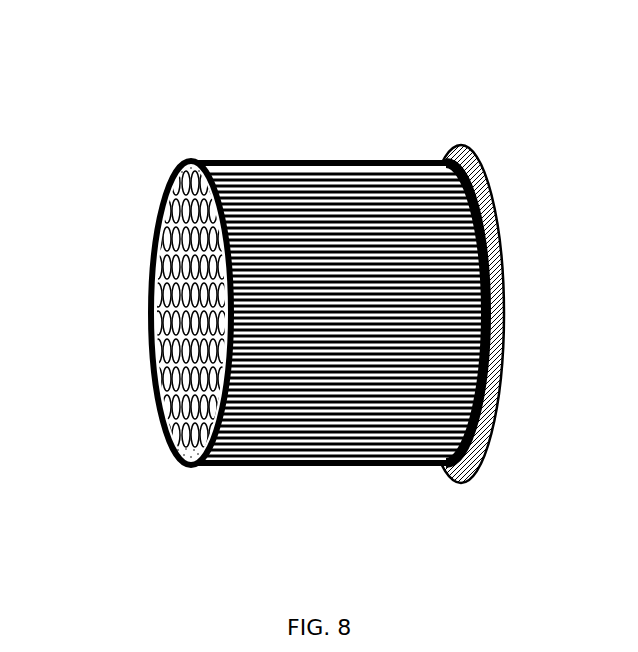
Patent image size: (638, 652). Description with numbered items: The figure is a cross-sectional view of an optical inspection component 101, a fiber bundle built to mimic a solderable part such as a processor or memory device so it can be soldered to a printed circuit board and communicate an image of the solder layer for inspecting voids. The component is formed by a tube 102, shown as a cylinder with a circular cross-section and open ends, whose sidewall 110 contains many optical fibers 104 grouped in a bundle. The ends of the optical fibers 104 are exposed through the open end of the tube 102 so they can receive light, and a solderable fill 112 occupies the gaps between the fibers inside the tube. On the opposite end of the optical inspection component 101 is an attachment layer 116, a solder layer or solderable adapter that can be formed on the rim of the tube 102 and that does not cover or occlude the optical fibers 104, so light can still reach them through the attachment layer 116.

The optical inspection component 101 is at (201, 78).
The tube 102 is at (193, 467).
The optical fibers 104 is at (172, 190).
The sidewall 110 is at (395, 420).
The solderable fill 112 is at (178, 450).
The attachment layer 116 is at (475, 462).